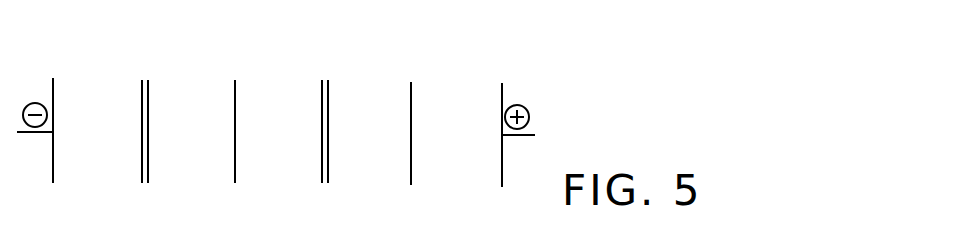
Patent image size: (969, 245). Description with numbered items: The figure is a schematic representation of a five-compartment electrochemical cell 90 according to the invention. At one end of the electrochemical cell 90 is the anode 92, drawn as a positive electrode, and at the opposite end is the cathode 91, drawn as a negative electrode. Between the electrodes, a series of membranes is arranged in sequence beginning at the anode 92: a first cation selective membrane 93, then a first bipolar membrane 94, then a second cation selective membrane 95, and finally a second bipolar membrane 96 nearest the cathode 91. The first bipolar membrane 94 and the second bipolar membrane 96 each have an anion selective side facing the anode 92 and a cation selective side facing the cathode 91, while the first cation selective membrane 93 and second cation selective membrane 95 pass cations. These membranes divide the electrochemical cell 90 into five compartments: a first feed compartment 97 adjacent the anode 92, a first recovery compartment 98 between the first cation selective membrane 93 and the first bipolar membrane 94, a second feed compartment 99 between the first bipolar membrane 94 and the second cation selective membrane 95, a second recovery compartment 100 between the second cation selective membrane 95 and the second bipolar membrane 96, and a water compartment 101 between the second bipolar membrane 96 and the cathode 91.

The electrochemical cell 90 is at (493, 49).
The cathode 91 is at (53, 97).
The anode 92 is at (503, 92).
The first cation selective membrane 93 is at (412, 102).
The first bipolar membrane 94 is at (329, 100).
The second cation selective membrane 95 is at (236, 100).
The second bipolar membrane 96 is at (148, 100).
The first feed compartment 97 is at (459, 168).
The first recovery compartment 98 is at (373, 168).
The second feed compartment 99 is at (279, 168).
The second recovery compartment 100 is at (203, 168).
The water compartment 101 is at (107, 168).